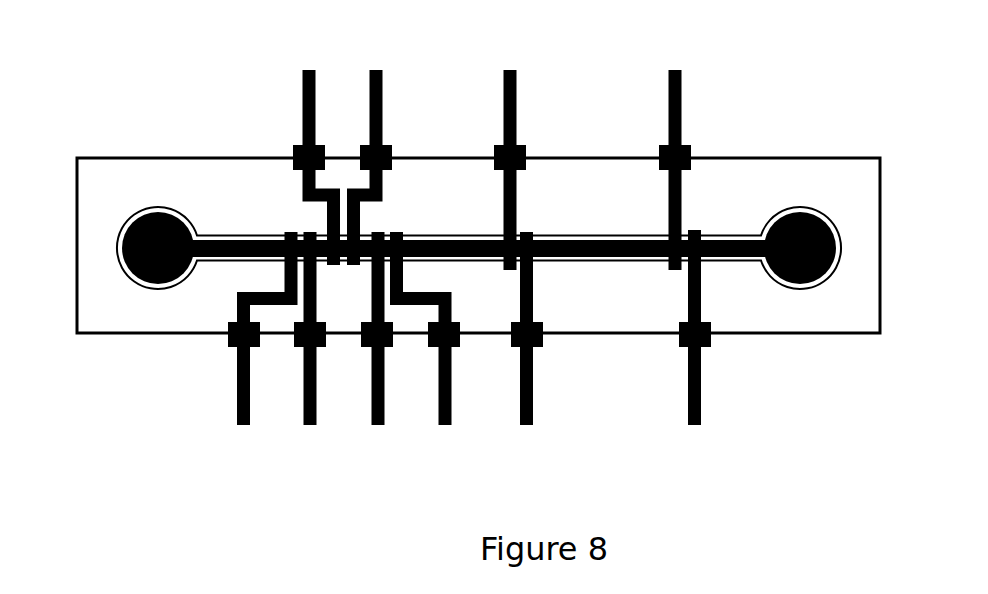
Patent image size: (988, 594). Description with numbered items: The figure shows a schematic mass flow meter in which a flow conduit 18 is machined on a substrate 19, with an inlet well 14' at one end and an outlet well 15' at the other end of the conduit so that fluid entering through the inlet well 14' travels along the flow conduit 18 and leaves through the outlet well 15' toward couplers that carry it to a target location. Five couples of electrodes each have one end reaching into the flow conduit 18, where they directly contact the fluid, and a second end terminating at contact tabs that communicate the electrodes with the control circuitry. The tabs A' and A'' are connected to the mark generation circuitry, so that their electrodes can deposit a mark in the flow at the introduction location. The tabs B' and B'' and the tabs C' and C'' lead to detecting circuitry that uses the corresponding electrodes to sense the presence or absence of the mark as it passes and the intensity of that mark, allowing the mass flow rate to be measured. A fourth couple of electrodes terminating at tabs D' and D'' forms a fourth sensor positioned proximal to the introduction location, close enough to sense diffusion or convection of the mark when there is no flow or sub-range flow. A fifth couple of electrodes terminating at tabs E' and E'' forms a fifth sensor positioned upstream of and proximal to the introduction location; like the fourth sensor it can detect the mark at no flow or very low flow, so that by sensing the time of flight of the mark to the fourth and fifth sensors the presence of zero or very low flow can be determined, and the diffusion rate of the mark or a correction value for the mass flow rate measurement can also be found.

The inlet well 14' is at (121, 183).
The outlet well 15' is at (836, 173).
The flow conduit 18 is at (478, 175).
The substrate 19 is at (118, 303).
The contact tab A' is at (310, 137).
The contact tab A'' is at (377, 137).
The contact tab B' is at (508, 140).
The contact tab B'' is at (527, 358).
The contact tab C' is at (675, 140).
The contact tab C'' is at (695, 357).
The contact tab D' is at (378, 358).
The contact tab D'' is at (436, 358).
The contact tab E' is at (252, 358).
The contact tab E'' is at (312, 358).